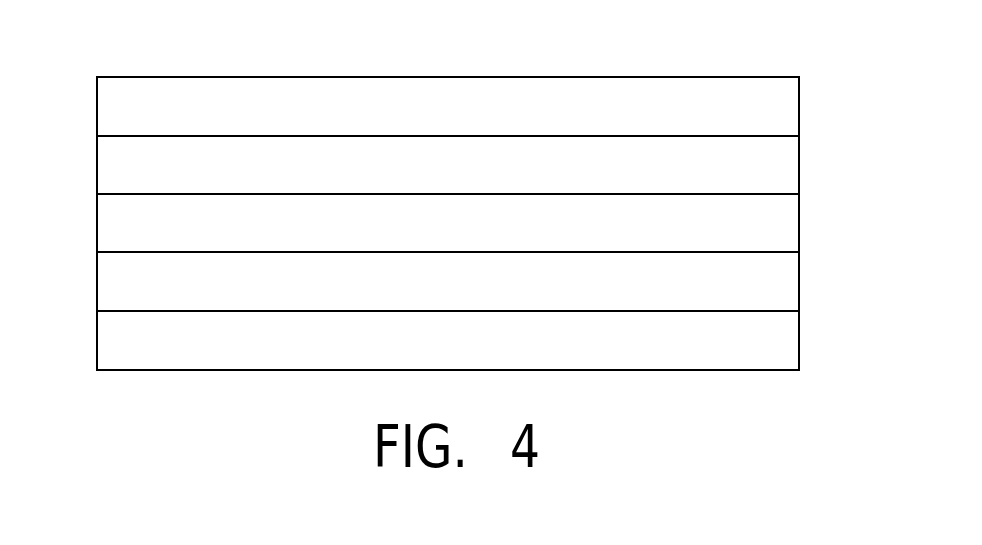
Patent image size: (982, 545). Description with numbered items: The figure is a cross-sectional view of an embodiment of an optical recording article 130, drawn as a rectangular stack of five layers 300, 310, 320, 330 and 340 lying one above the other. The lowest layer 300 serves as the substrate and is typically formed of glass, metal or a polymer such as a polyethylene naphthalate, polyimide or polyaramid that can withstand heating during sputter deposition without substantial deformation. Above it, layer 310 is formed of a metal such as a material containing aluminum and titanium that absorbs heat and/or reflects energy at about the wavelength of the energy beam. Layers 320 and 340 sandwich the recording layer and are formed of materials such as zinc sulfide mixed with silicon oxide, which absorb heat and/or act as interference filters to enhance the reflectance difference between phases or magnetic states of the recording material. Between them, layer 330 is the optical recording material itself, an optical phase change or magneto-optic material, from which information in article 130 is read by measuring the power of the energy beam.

The article 130 is at (822, 95).
The layer 300 is at (97, 345).
The layer 310 is at (97, 288).
The layer 320 is at (97, 233).
The layer 330 is at (97, 168).
The layer 340 is at (97, 113).